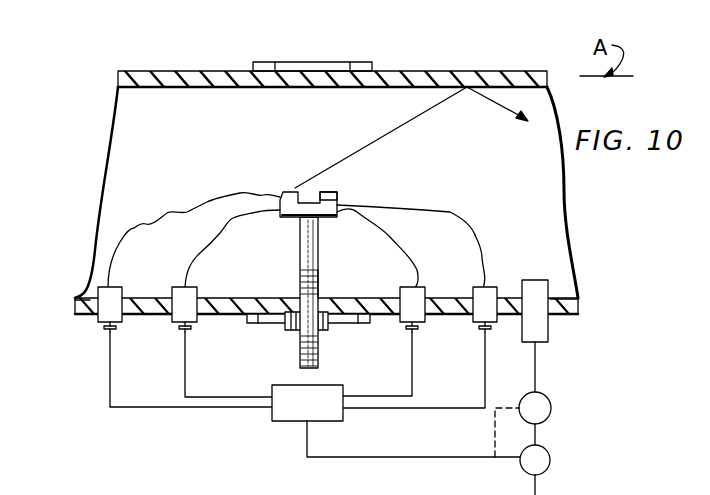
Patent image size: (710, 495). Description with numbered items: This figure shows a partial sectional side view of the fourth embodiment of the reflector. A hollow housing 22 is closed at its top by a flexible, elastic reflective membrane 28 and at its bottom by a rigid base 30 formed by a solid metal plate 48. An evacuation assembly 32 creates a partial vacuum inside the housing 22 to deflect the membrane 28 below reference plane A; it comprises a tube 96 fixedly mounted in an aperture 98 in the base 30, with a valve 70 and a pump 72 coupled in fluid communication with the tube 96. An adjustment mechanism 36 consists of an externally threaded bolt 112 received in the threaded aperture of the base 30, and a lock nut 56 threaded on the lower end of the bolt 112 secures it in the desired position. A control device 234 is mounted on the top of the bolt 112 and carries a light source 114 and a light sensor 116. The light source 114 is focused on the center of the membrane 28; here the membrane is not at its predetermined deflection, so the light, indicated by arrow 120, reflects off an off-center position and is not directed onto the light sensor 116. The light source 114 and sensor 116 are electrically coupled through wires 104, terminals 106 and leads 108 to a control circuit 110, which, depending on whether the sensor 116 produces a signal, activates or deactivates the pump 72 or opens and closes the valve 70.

The reflective membrane 28 is at (422, 82).
The housing 22 is at (539, 232).
The light arrow 120 is at (405, 123).
The base 30 is at (579, 315).
The plate 48 is at (86, 306).
The aperture 98 is at (551, 303).
The lock nut 56 is at (329, 331).
The threaded rod or bolt 112 is at (305, 232).
The adjustment mechanism 36 is at (319, 289).
The light source 114 is at (292, 188).
The light sensor 116 is at (337, 196).
The control device 234 is at (341, 196).
The wires 104 is at (207, 253).
The terminals 106 is at (177, 316).
The tube 96 is at (548, 259).
The leads 108 is at (183, 371).
The control circuit 110 is at (298, 410).
The valve 70 is at (545, 394).
The evacuation assembly 32 is at (539, 435).
The pump 72 is at (549, 466).